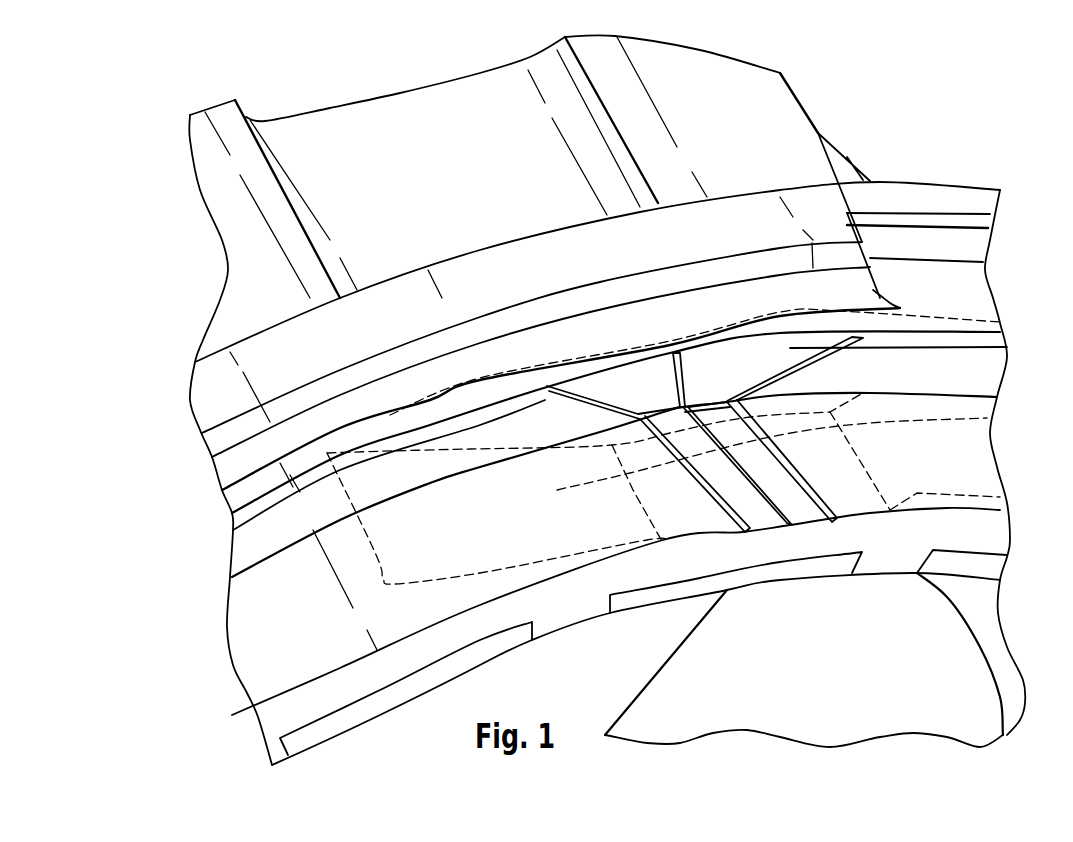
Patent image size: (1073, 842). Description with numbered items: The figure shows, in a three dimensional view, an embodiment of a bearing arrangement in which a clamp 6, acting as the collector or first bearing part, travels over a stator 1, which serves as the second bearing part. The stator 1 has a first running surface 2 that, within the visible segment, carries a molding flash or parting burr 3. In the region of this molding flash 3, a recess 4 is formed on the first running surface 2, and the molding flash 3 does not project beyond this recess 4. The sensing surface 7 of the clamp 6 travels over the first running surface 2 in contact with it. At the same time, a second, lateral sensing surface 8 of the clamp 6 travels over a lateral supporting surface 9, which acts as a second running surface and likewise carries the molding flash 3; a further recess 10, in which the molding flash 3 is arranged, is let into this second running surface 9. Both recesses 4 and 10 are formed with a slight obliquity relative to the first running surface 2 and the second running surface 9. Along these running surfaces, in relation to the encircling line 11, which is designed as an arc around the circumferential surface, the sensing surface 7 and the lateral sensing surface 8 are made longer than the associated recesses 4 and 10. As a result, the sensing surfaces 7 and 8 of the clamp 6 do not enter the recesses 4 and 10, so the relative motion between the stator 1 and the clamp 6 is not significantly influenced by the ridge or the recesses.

The stator 1 is at (567, 607).
The first running surface 2 is at (310, 620).
The molding flash 3 is at (682, 378).
The recess 4 is at (795, 498).
The clamp 6 is at (962, 444).
The sensing surface 7 is at (673, 512).
The lateral sensing surface 8 is at (466, 438).
The lateral supporting surface 9 is at (272, 534).
The recess 10 is at (758, 357).
The encircling line 11 is at (947, 508).